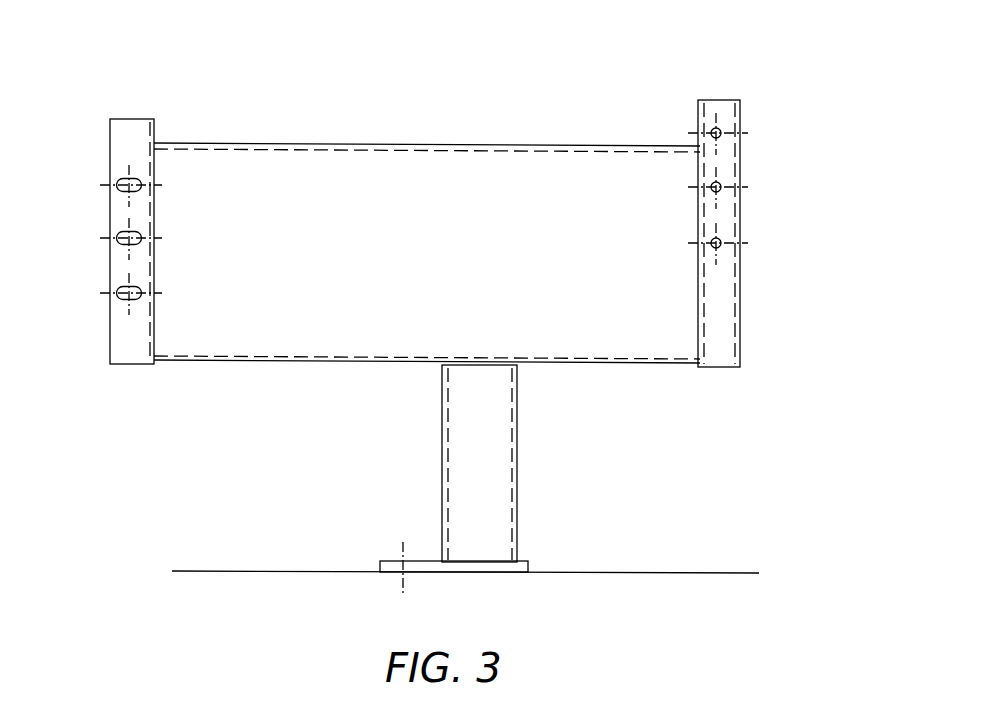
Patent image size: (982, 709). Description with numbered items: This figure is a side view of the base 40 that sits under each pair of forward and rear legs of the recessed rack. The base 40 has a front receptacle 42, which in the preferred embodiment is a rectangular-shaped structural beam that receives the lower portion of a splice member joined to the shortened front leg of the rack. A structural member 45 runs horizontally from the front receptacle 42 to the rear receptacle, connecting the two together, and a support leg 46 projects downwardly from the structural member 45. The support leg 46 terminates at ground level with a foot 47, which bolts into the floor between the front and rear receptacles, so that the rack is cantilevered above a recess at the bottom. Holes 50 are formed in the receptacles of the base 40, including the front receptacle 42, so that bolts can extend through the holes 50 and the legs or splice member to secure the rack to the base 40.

The base 40 is at (286, 101).
The front receptacle 42 is at (742, 264).
The structural member 45 is at (375, 150).
The support leg 46 is at (517, 473).
The foot 47 is at (425, 561).
The holes 50 is at (121, 192).